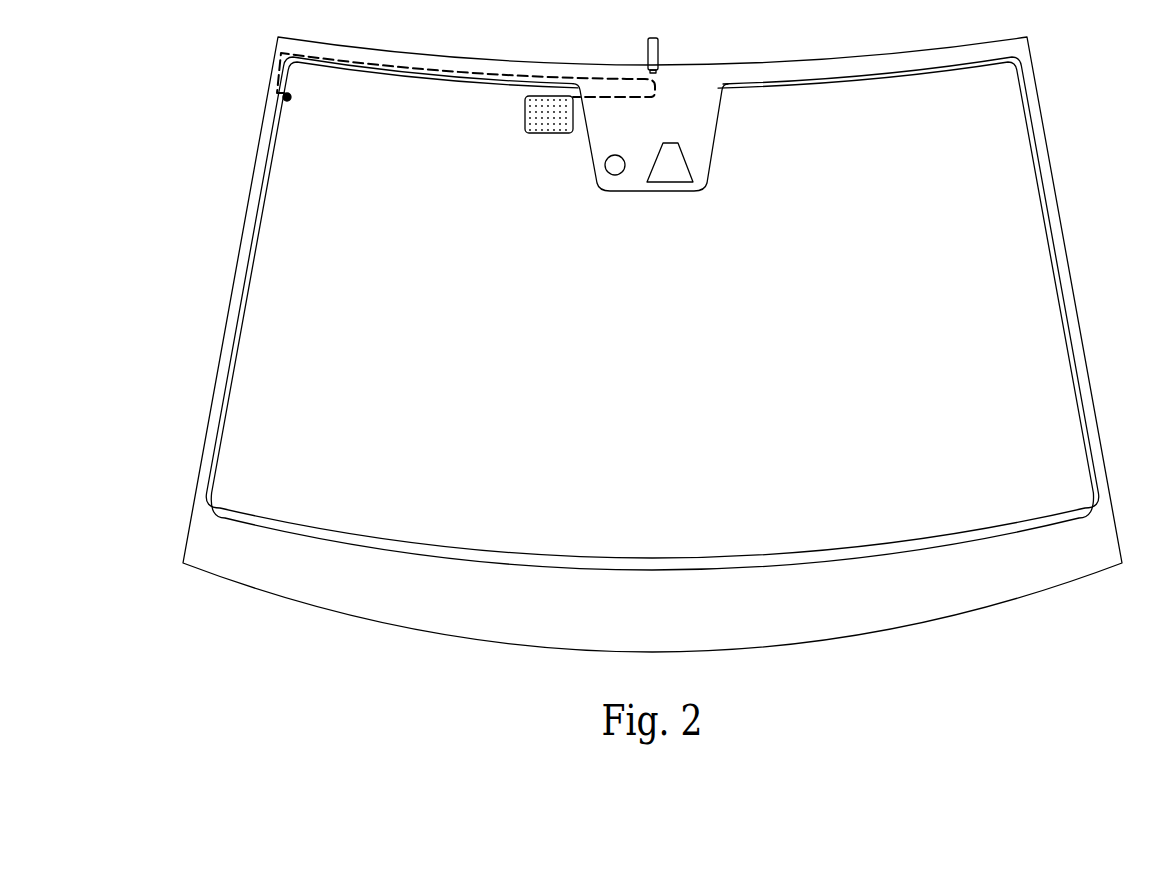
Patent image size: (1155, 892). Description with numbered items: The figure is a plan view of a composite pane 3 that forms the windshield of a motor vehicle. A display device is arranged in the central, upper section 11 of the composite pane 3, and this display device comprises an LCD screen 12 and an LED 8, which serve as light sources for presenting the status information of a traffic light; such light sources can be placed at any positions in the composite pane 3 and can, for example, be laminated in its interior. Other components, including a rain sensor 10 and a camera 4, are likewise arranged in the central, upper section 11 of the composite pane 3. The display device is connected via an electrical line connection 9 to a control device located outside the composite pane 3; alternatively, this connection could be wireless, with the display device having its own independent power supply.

The composite pane 3 is at (1055, 168).
The camera 4 is at (690, 163).
The LED 8 is at (290, 100).
The electrical line connection 9 is at (447, 70).
The rain sensor 10 is at (608, 175).
The central, upper section 11 is at (652, 187).
The LCD screen 12 is at (525, 115).